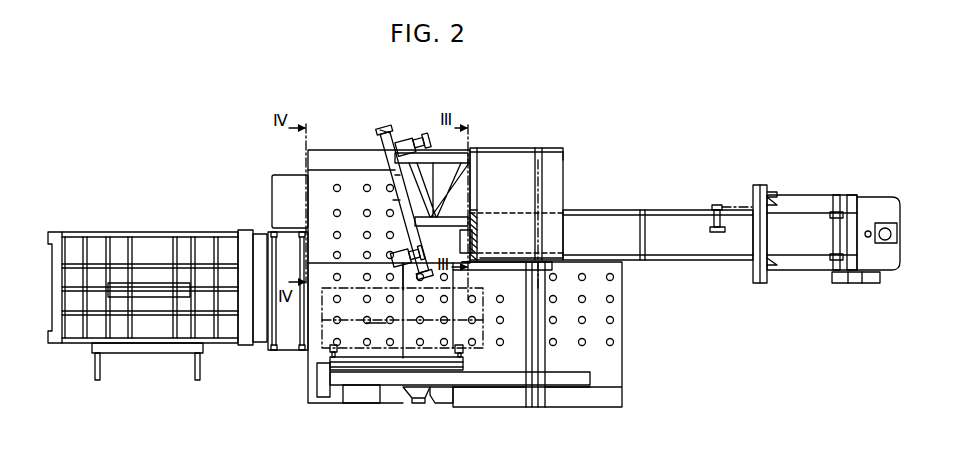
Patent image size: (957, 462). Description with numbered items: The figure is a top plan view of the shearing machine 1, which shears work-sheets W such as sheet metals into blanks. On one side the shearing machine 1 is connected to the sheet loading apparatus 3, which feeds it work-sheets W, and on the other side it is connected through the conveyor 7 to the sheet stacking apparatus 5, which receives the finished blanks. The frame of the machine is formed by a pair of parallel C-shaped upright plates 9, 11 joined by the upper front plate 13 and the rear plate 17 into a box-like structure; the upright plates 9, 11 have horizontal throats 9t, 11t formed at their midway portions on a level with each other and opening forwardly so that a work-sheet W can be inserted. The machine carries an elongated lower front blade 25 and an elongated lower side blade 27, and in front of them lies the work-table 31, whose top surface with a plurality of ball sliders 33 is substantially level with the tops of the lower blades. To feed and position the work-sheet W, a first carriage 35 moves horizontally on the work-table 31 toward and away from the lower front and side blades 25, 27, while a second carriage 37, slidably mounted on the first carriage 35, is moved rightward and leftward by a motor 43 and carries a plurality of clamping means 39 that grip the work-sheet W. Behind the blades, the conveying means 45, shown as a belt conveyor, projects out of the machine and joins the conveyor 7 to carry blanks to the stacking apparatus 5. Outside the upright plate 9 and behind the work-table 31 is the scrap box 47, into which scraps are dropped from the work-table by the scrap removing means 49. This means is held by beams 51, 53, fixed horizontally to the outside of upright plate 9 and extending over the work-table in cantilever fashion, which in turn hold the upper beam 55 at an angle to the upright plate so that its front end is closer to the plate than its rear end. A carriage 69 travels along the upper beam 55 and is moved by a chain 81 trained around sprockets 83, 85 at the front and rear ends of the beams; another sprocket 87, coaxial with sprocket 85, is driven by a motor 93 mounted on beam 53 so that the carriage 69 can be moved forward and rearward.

The shearing machine 1 is at (579, 152).
The sheet loading apparatus 3 is at (175, 231).
The sheet stacking apparatus 5 is at (818, 190).
The conveyor 7 is at (673, 205).
The upright plate 9 is at (479, 176).
The throat 9t is at (478, 207).
The upright plate 11 is at (541, 171).
The throat 11t is at (536, 206).
The upper front plate 13 is at (503, 250).
The rear plate 17 is at (508, 148).
The lower front blade 25 is at (518, 262).
The lower side blade 27 is at (468, 226).
The work-table 31 is at (378, 315).
The ball sliders 33 is at (337, 300).
The first carriage 35 is at (462, 380).
The second carriage 37 is at (392, 369).
The clamping means 39 is at (332, 350).
The motor 43 is at (358, 392).
The conveying means 45 is at (628, 252).
The scrap box 47 is at (325, 158).
The scrap removing means 49 is at (392, 201).
The beam 51 is at (439, 190).
The beam 53 is at (442, 153).
The upper beam 55 is at (398, 176).
The carriage 69 is at (402, 253).
The chain 81 is at (387, 167).
The sprocket 83 is at (420, 278).
The sprocket 85 is at (383, 130).
The sprocket 87 is at (398, 140).
The motor 93 is at (418, 138).
The work-sheet W is at (485, 333).